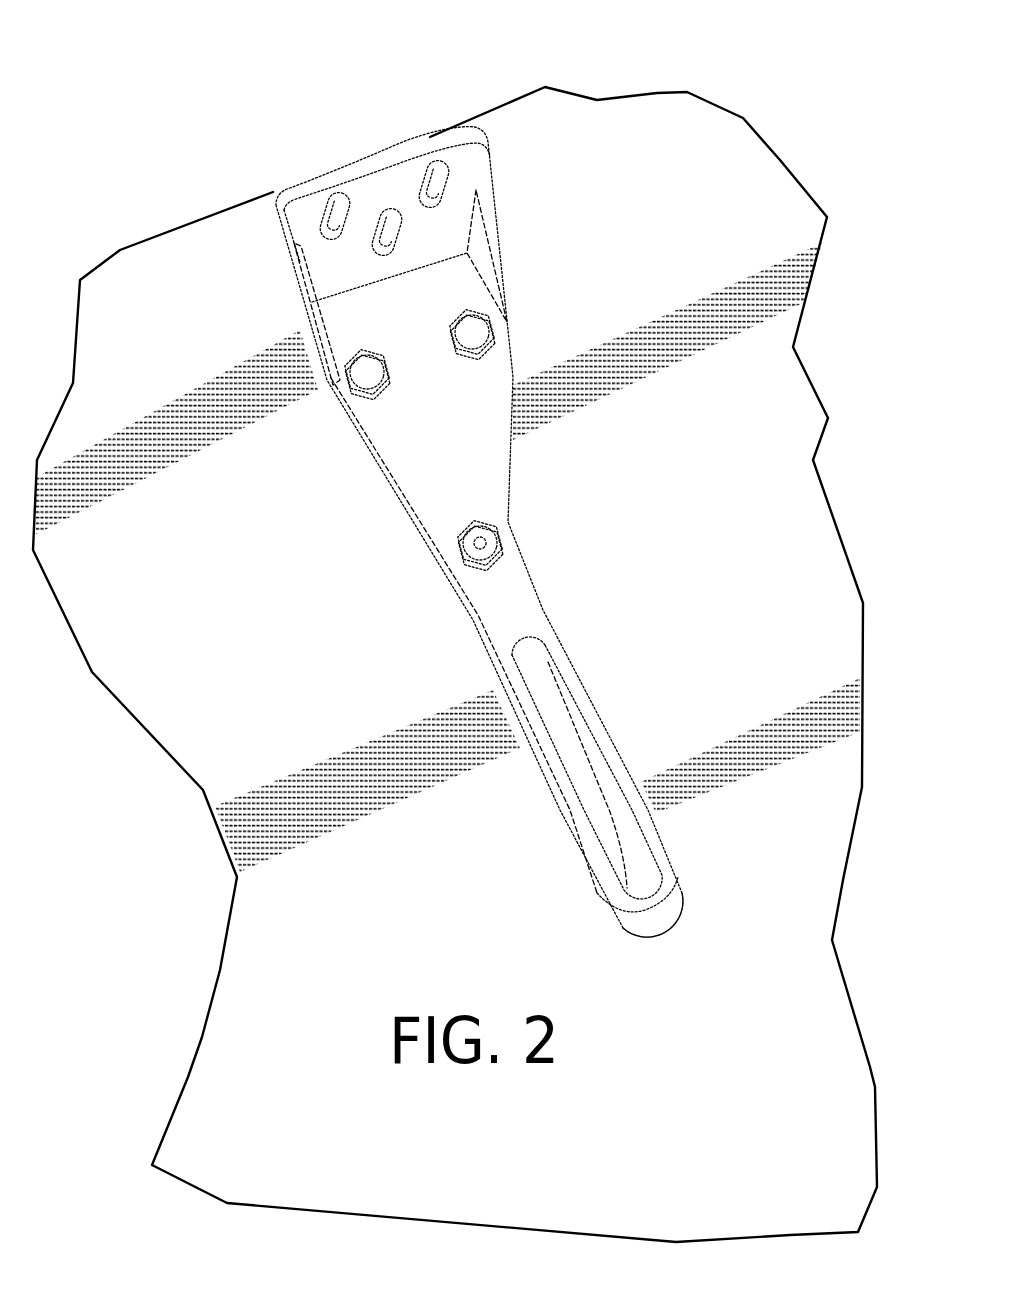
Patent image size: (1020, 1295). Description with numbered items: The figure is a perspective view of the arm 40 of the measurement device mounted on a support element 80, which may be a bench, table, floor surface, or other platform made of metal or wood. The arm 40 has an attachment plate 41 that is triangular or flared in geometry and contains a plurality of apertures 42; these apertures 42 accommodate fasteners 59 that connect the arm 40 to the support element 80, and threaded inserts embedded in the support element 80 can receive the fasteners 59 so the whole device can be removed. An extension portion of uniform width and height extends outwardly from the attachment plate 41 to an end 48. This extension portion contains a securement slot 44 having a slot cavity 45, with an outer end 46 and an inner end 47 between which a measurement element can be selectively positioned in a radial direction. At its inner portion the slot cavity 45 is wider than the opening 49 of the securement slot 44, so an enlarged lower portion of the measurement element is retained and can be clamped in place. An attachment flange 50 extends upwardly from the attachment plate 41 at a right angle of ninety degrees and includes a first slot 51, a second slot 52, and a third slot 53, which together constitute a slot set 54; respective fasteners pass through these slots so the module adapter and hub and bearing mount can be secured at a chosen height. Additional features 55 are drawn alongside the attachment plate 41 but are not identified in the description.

The arm 40 is at (469, 476).
The attachment plate 41 is at (465, 460).
The apertures 42 is at (460, 546).
The securement slot 44 is at (628, 758).
The slot cavity 45 is at (625, 742).
The outer end 46 is at (657, 893).
The inner end 47 is at (525, 635).
The end 48 is at (647, 930).
The opening 49 is at (572, 765).
The attachment flange 50 is at (405, 155).
The first slot 51 is at (333, 195).
The second slot 52 is at (383, 218).
The third slot 53 is at (430, 173).
The slot set 54 is at (298, 15).
The side flange 55 is at (470, 257).
The fasteners 59 is at (363, 365).
The support element 80 is at (760, 643).